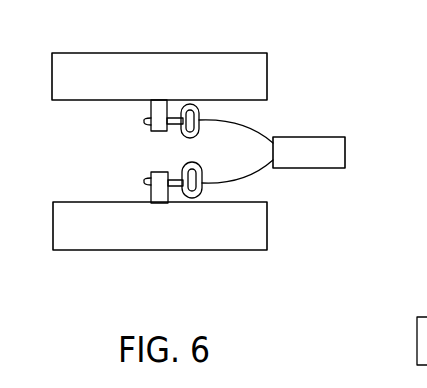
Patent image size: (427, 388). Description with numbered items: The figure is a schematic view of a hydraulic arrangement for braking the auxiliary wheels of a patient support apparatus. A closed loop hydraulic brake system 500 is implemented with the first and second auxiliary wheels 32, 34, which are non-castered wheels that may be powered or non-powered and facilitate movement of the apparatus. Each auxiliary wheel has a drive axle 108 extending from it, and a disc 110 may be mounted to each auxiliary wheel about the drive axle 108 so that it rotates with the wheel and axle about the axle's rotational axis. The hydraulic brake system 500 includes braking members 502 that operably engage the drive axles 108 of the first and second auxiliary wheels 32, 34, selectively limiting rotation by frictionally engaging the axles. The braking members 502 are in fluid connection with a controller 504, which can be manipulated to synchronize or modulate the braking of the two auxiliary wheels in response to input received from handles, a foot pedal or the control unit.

The auxiliary wheel 32 is at (137, 60).
The auxiliary wheel 34 is at (107, 242).
The drive axle 108 is at (150, 109).
The disc 110 is at (165, 192).
The closed loop hydraulic brake system 500 is at (290, 72).
The braking member 502 is at (202, 116).
The controller 504 is at (342, 149).